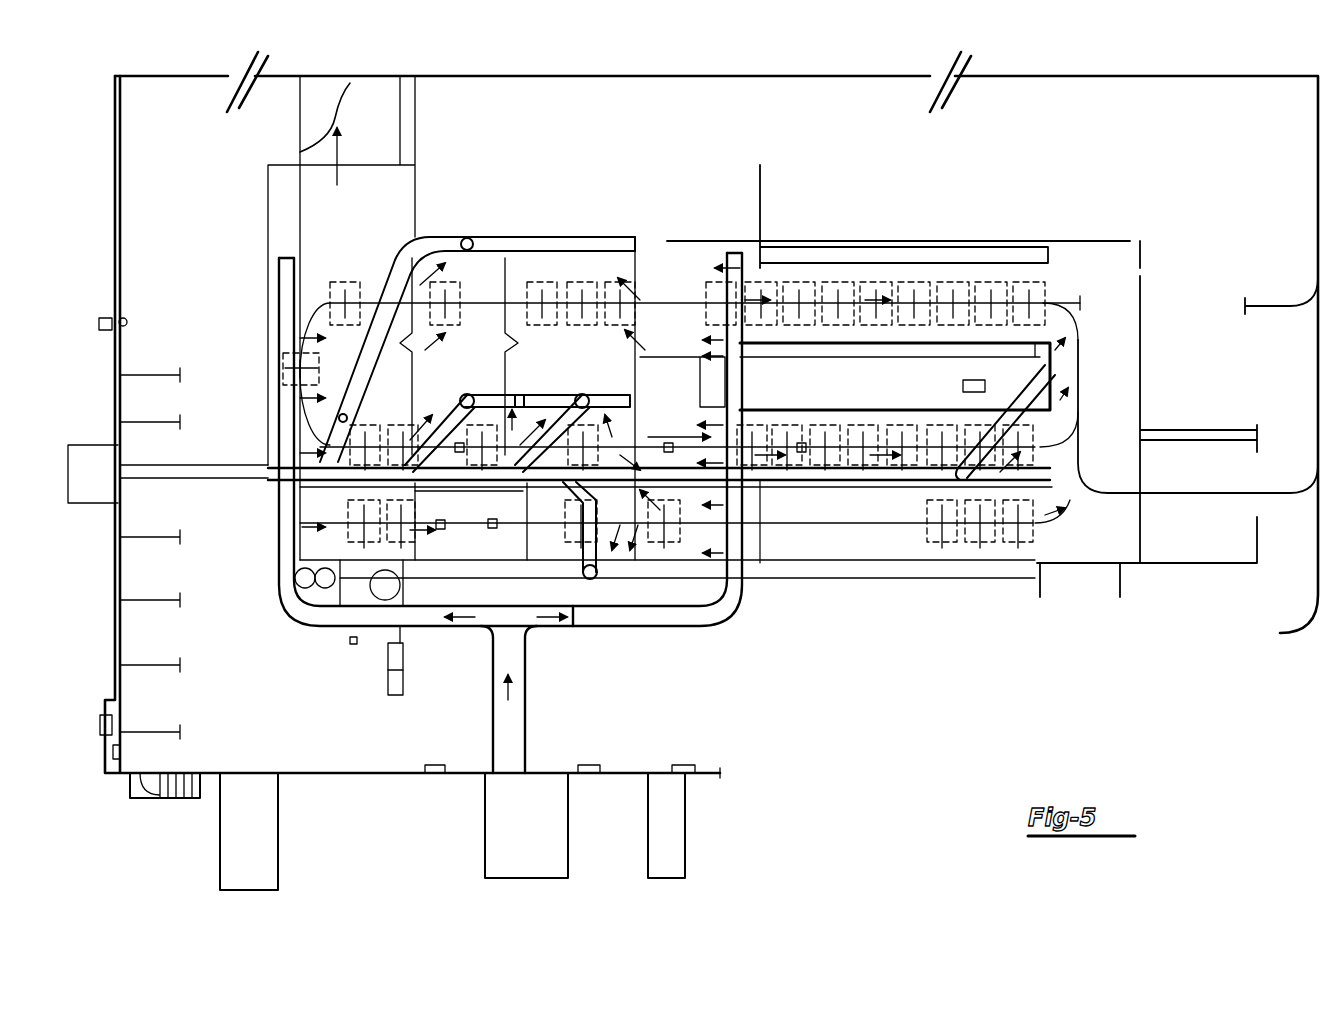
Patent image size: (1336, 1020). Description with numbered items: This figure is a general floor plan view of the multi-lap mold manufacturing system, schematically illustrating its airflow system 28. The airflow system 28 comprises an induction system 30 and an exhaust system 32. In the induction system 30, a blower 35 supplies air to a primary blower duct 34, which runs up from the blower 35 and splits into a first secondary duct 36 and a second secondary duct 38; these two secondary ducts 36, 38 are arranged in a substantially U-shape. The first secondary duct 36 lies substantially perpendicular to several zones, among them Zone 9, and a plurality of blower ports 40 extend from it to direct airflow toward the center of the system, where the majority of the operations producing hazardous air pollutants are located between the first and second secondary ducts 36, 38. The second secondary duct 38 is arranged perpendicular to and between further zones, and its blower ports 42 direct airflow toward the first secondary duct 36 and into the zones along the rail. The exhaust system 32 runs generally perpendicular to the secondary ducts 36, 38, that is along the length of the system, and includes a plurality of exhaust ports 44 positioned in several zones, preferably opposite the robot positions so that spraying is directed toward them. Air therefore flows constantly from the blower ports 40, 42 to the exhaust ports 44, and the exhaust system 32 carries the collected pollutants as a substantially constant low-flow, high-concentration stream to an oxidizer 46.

The airflow system 28 is at (1025, 220).
The induction system 30 is at (525, 735).
The exhaust system 32 is at (218, 488).
The primary blower duct 34 is at (521, 660).
The blower 35 is at (540, 838).
The first secondary duct 36 is at (278, 292).
The second secondary duct 38 is at (725, 318).
The blower ports 40 is at (296, 262).
The blower ports 42 is at (752, 280).
The exhaust ports 44 is at (470, 238).
The oxidizer 46 is at (96, 486).
The Zone 9 is at (300, 286).